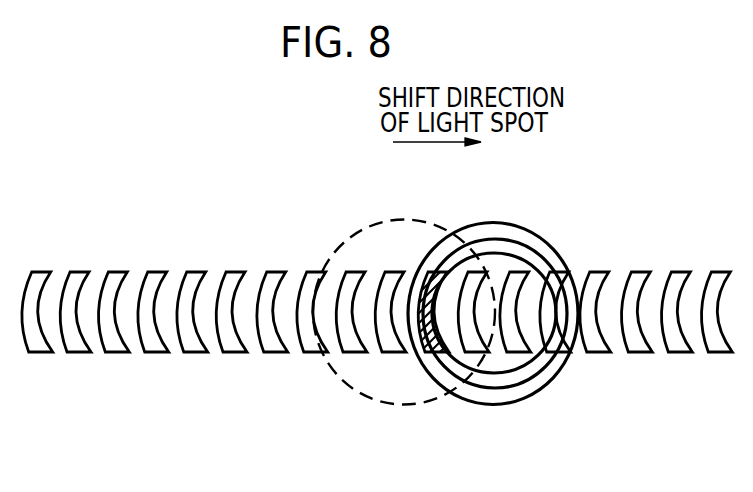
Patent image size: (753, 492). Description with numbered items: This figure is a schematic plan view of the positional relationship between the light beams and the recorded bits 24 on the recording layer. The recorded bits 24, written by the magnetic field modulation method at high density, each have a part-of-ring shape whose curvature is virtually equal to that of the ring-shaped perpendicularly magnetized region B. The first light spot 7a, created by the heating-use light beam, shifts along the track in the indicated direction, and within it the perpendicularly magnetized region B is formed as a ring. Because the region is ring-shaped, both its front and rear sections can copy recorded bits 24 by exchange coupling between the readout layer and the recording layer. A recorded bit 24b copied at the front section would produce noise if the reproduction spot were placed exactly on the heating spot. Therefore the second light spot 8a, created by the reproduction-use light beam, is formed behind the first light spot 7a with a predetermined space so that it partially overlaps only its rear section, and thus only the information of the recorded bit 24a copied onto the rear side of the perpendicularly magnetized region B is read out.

The recorded bits 24 is at (377, 340).
The recorded bit 24a is at (421, 352).
The recorded bit 24b is at (553, 352).
The first light spot 7a is at (495, 331).
The second light spot 8a is at (363, 395).
The perpendicularly magnetized region B is at (532, 249).